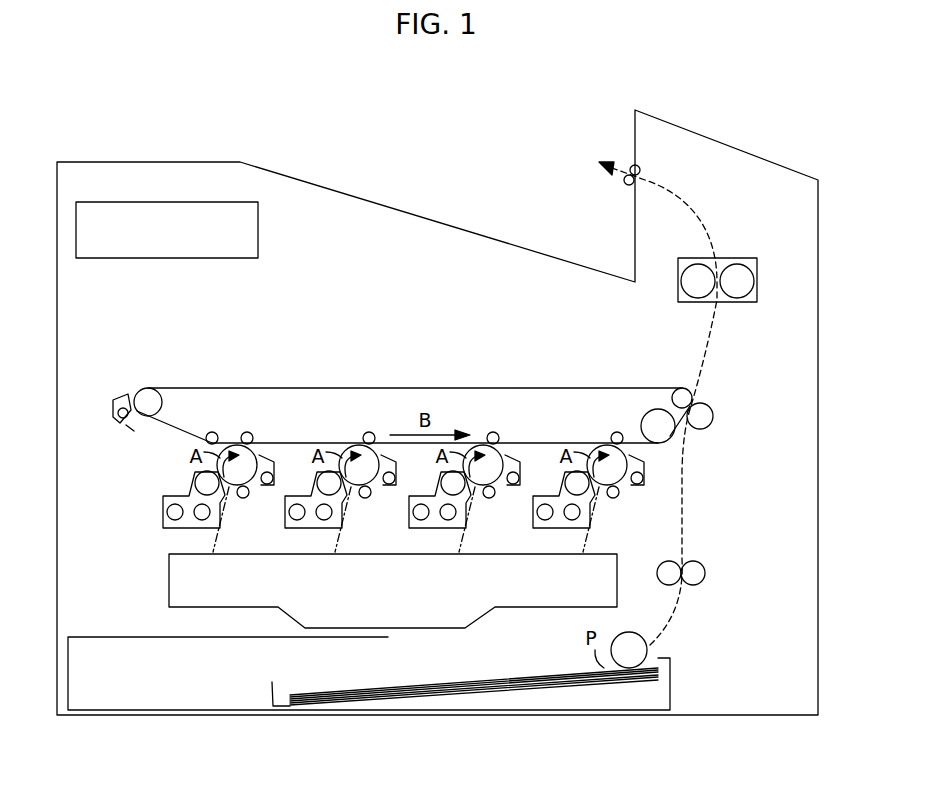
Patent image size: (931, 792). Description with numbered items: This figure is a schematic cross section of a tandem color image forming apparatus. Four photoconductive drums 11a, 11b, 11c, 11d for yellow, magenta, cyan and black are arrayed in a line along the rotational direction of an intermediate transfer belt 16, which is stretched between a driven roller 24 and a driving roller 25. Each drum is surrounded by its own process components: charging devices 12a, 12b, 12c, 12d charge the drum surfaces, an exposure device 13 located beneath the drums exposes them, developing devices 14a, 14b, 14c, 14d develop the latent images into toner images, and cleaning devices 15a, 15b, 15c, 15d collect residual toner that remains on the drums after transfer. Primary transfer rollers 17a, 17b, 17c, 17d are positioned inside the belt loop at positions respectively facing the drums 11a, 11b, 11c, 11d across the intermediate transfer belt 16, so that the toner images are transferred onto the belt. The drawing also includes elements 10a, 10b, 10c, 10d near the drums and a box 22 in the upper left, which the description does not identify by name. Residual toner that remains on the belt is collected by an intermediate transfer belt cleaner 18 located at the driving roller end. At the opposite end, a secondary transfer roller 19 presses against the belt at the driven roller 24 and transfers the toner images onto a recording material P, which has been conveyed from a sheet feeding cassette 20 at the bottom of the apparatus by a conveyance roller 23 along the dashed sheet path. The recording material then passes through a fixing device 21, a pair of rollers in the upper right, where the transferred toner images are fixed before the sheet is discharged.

The photosensitive drum 10a is at (252, 490).
The photosensitive drum 10b is at (373, 520).
The photosensitive drum 10c is at (496, 520).
The photosensitive drum 10d is at (621, 504).
The photoconductive drum 11a is at (234, 447).
The photoconductive drum 11b is at (337, 427).
The photoconductive drum 11c is at (520, 429).
The photoconductive drum 11d is at (584, 425).
The charging device 12a is at (245, 498).
The charging device 12b is at (365, 512).
The charging device 12c is at (487, 512).
The charging device 12d is at (611, 512).
The exposure device 13 is at (517, 608).
The developing device 14a is at (180, 496).
The developing device 14b is at (311, 491).
The developing device 14c is at (435, 491).
The developing device 14d is at (558, 491).
The cleaning device 15a is at (270, 490).
The cleaning device 15b is at (402, 504).
The cleaning device 15c is at (525, 504).
The cleaning device 15d is at (653, 493).
The intermediate transfer belt 16 is at (470, 386).
The primary transfer roller 17a is at (249, 432).
The primary transfer roller 17b is at (372, 421).
The primary transfer roller 17c is at (495, 421).
The primary transfer roller 17d is at (620, 420).
The intermediate transfer belt cleaner 18 is at (125, 394).
The secondary transfer roller 19 is at (713, 417).
The sheet feeding cassette 20 is at (672, 672).
The fixing device 21 is at (738, 257).
The controller 22 is at (165, 259).
The conveyance roller 23 is at (705, 576).
The driven roller 24 is at (679, 388).
The driving roller 25 is at (151, 391).